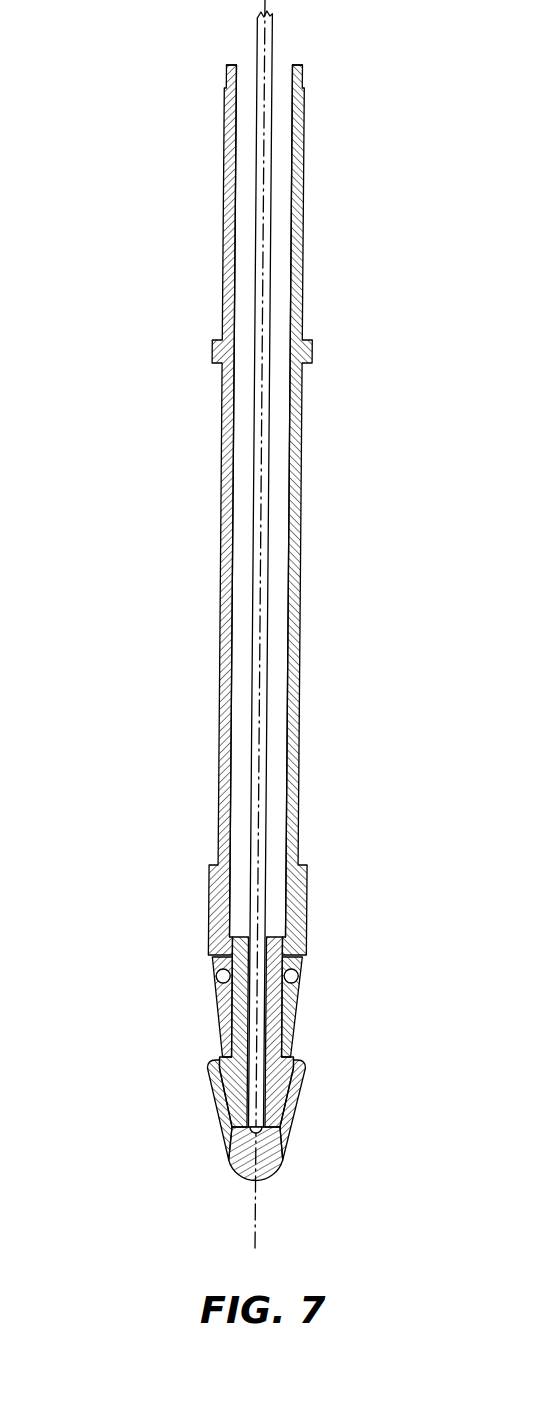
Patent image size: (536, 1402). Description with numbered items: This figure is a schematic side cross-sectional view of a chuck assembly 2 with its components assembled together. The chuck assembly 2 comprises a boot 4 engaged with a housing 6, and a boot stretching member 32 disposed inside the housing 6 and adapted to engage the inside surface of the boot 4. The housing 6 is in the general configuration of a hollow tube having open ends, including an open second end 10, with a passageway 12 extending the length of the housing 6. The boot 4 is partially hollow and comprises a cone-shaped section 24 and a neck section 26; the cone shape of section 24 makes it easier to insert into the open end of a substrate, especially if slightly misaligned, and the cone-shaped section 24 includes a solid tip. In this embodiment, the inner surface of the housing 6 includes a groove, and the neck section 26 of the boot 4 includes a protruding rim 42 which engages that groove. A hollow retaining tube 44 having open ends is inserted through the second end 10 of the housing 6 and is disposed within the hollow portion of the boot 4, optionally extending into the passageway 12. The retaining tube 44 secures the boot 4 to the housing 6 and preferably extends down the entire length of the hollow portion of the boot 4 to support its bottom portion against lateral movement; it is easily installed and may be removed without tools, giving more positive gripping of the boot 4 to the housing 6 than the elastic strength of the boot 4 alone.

The chuck assembly 2 is at (126, 548).
The boot 4 is at (214, 1163).
The housing 6 is at (223, 474).
The second end 10 is at (283, 72).
The passageway 12 is at (281, 756).
The cone-shaped section 24 is at (276, 1148).
The neck section 26 is at (283, 1030).
The boot stretching member 32 is at (270, 494).
The protruding rim 42 is at (297, 978).
The retaining tube 44 is at (284, 1013).